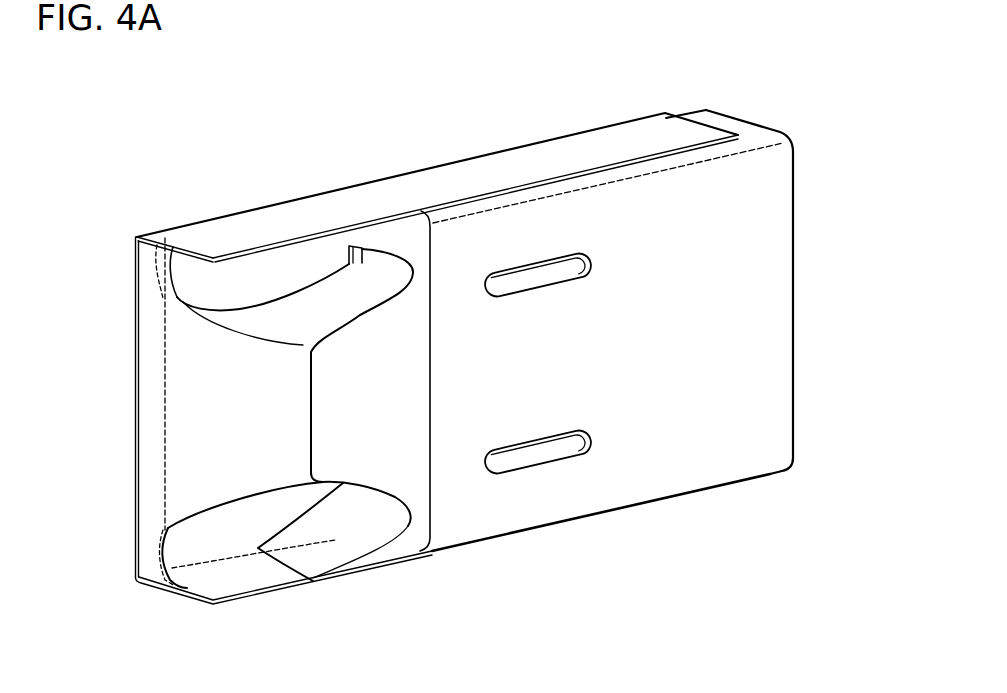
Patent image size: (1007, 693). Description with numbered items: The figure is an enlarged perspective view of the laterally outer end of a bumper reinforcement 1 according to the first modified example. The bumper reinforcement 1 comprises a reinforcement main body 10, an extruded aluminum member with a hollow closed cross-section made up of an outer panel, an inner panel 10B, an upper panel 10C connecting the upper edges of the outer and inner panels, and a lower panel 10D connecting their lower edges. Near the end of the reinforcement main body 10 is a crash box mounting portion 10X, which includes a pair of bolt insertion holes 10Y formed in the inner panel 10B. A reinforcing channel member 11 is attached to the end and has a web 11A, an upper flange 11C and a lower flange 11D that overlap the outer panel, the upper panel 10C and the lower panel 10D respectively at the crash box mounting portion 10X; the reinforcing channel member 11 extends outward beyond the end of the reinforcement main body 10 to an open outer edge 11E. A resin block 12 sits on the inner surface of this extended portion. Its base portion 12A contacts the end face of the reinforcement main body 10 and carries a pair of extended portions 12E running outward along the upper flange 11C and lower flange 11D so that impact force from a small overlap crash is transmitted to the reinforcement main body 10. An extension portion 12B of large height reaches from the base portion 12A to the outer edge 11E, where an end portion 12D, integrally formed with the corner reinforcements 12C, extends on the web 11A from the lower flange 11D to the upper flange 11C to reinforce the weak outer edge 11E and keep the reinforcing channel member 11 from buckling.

The bumper reinforcement 1 is at (431, 128).
The reinforcement main body 10 is at (779, 252).
The inner panel 10B is at (778, 340).
The upper panel 10C is at (744, 125).
The lower panel 10D is at (747, 470).
The crash box mounting portion 10X is at (510, 548).
The bolt insertion holes 10Y is at (545, 282).
The reinforcing channel member 11 is at (507, 166).
The web 11A is at (185, 282).
The upper flange 11C is at (250, 222).
The lower flange 11D is at (270, 575).
The outer edge 11E is at (135, 515).
The resin block 12 is at (320, 420).
The base portion 12A is at (417, 525).
The extension portion 12B is at (222, 488).
The corner reinforcements 12C is at (152, 254).
The end portion 12D is at (148, 410).
The extended portions 12E is at (376, 245).